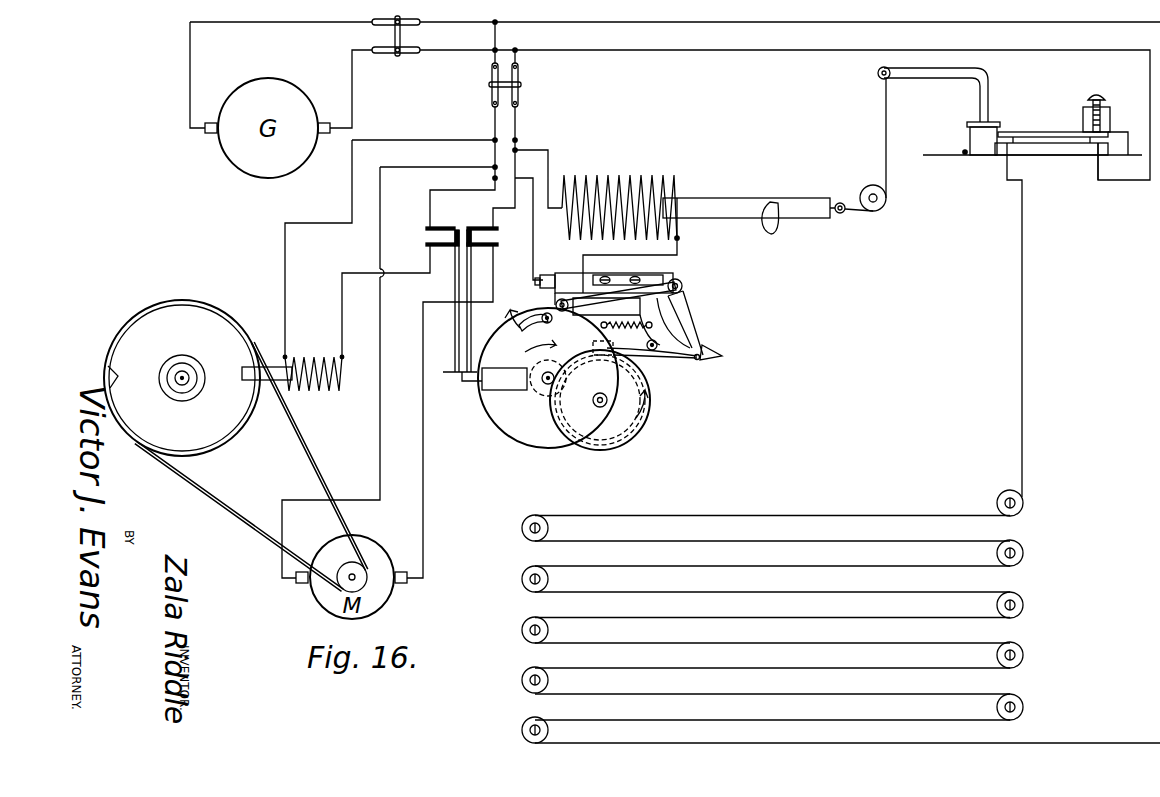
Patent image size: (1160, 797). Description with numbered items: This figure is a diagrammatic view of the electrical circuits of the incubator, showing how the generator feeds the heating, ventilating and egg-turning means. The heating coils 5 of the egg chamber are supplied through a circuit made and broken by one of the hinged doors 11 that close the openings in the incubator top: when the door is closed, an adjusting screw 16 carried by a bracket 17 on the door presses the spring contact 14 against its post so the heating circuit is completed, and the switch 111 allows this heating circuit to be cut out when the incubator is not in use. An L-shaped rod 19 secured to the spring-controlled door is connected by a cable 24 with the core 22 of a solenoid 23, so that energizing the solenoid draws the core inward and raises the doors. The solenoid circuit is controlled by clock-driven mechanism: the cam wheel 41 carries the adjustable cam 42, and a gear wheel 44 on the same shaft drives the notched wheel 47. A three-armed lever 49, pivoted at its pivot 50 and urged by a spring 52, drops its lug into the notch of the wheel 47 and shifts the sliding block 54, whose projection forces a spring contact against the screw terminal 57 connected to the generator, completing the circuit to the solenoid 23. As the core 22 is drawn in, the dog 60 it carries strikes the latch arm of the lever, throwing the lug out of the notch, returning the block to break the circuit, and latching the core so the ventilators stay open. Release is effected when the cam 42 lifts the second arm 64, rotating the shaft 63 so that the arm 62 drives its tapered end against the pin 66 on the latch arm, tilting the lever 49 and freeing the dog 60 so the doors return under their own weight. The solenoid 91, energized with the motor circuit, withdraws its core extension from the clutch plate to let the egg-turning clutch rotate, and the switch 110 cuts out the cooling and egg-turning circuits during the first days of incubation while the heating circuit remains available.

The heating coils 5 is at (729, 512).
The doors 11 is at (1040, 130).
The spring contact 14 is at (1062, 141).
The adjusting screw 16 is at (1106, 118).
The bracket 17 is at (1104, 108).
The L-shaped rod 19 is at (930, 77).
The core 22 is at (741, 198).
The solenoid 23 is at (631, 182).
The cable 24 is at (890, 160).
The cam wheel 41 is at (546, 449).
The cam 42 is at (516, 311).
The gear wheel 44 is at (539, 394).
The wheel 47 is at (648, 423).
The three-armed lever 49 is at (691, 359).
The pivot 50 is at (655, 352).
The spring 52 is at (694, 333).
The sliding block 54 is at (673, 275).
The screw terminal 57 is at (547, 273).
The dog 60 is at (778, 228).
The arm 62 is at (697, 316).
The shaft 63 is at (683, 287).
The second arm 64 is at (686, 301).
The pin 66 is at (722, 361).
The solenoid 91 is at (293, 357).
The switch 110 is at (521, 89).
The switch 111 is at (393, 34).